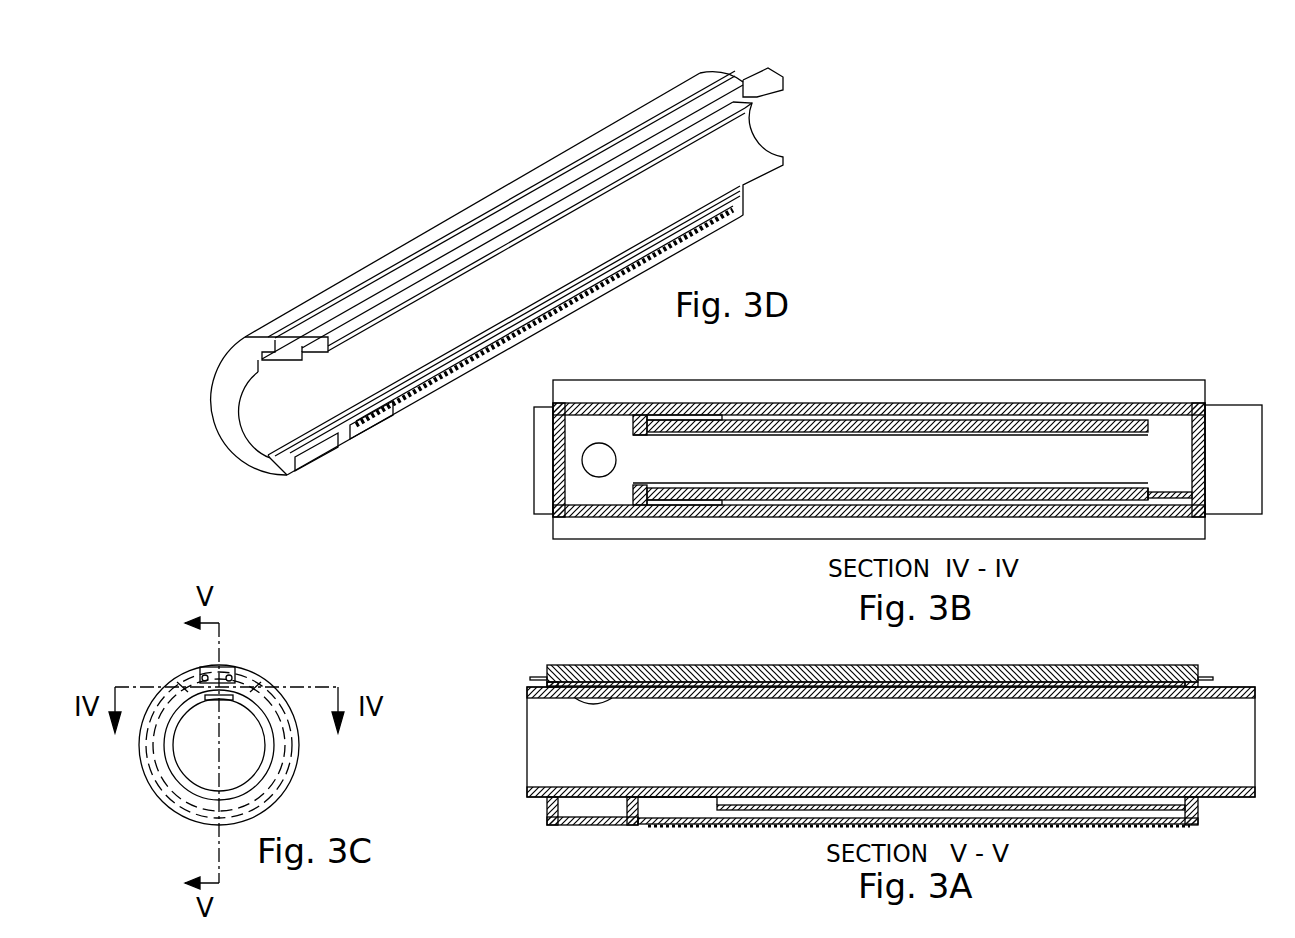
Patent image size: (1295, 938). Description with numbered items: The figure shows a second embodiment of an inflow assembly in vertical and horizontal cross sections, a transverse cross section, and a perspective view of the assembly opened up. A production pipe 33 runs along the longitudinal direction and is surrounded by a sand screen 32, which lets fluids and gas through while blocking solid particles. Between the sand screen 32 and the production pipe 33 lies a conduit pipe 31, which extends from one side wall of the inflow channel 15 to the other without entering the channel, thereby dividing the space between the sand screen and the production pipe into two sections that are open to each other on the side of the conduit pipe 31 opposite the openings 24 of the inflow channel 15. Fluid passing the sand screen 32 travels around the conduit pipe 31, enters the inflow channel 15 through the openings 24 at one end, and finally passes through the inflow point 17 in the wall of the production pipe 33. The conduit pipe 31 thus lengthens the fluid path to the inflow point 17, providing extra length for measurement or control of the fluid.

In FIG. 3B, the inflow channel 15 is at (803, 467).
In FIG. 3B, the inflow point 17 is at (598, 463).
In FIG. 3B, the openings 24 is at (1168, 473).
In FIG. 3D, the conduit pipe 31 is at (408, 622).
In FIG. 3B, the conduit pipe 31 is at (1165, 494).
In FIG. 3A, the conduit pipe 31 is at (742, 807).
In FIG. 3C, the conduit pipe 31 is at (282, 730).
In FIG. 3A, the sand screen 32 is at (680, 817).
In FIG. 3C, the sand screen 32 is at (269, 800).
In FIG. 3A, the production pipe 33 is at (742, 807).
In FIG. 3C, the production pipe 33 is at (262, 768).